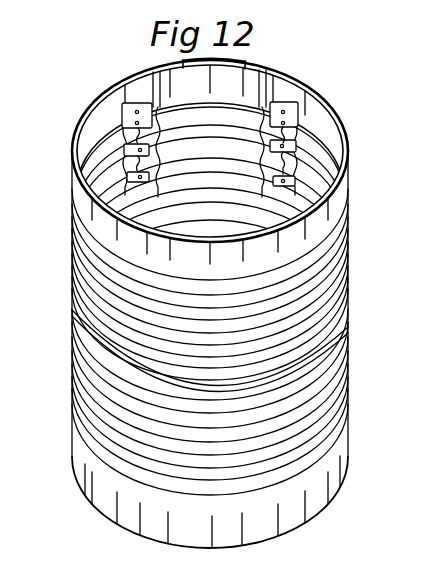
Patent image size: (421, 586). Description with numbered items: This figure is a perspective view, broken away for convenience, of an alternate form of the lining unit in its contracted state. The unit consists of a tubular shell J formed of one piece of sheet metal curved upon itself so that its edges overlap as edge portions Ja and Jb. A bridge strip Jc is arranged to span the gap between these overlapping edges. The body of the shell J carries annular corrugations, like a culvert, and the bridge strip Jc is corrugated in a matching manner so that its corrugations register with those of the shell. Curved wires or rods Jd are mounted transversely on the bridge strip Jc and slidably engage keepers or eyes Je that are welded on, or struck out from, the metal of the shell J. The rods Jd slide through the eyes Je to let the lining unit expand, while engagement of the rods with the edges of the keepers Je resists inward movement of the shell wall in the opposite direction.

The tubular shell J is at (340, 198).
The overlapping edge portion Ja is at (258, 68).
The overlapping edge portion Jb is at (187, 62).
The bridge strip Jc is at (223, 112).
The curved wires or rods Jd is at (302, 148).
The keepers or eyes Je is at (355, 102).